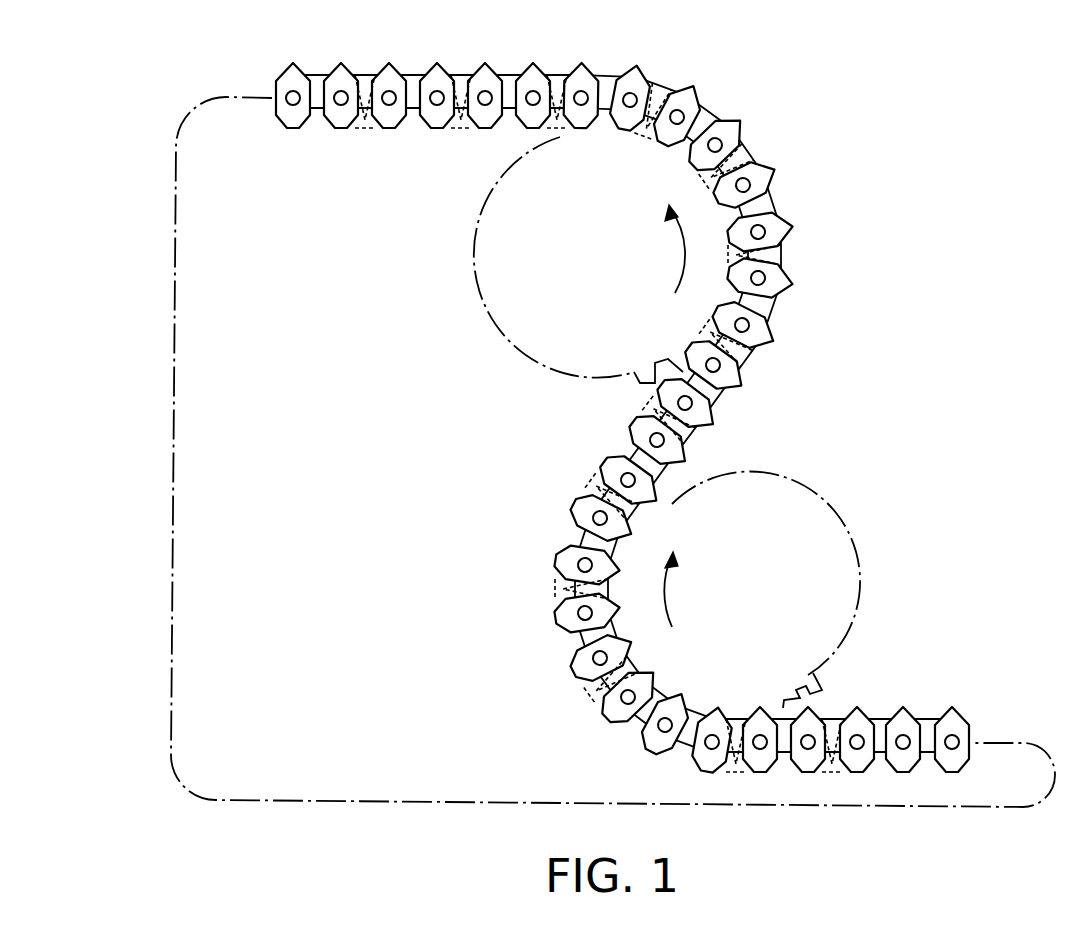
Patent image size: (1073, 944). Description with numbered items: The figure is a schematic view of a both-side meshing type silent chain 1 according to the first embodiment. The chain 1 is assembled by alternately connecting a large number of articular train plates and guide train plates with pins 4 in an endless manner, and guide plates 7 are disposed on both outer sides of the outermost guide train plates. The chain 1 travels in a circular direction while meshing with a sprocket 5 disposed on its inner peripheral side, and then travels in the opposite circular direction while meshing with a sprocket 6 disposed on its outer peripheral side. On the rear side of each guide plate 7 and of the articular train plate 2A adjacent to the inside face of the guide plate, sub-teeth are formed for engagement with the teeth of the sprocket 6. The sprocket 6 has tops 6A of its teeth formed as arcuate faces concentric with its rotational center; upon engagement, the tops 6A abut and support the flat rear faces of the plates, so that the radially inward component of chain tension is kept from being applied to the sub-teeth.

The chain 1 is at (622, 402).
The articular train plate adjacent to the guide plate 2A is at (705, 118).
The pin 4 is at (392, 96).
The sprocket 5 is at (503, 302).
The sprocket 6 is at (794, 589).
The tops of the teeth 6A is at (820, 693).
The guide plate 7 is at (547, 150).